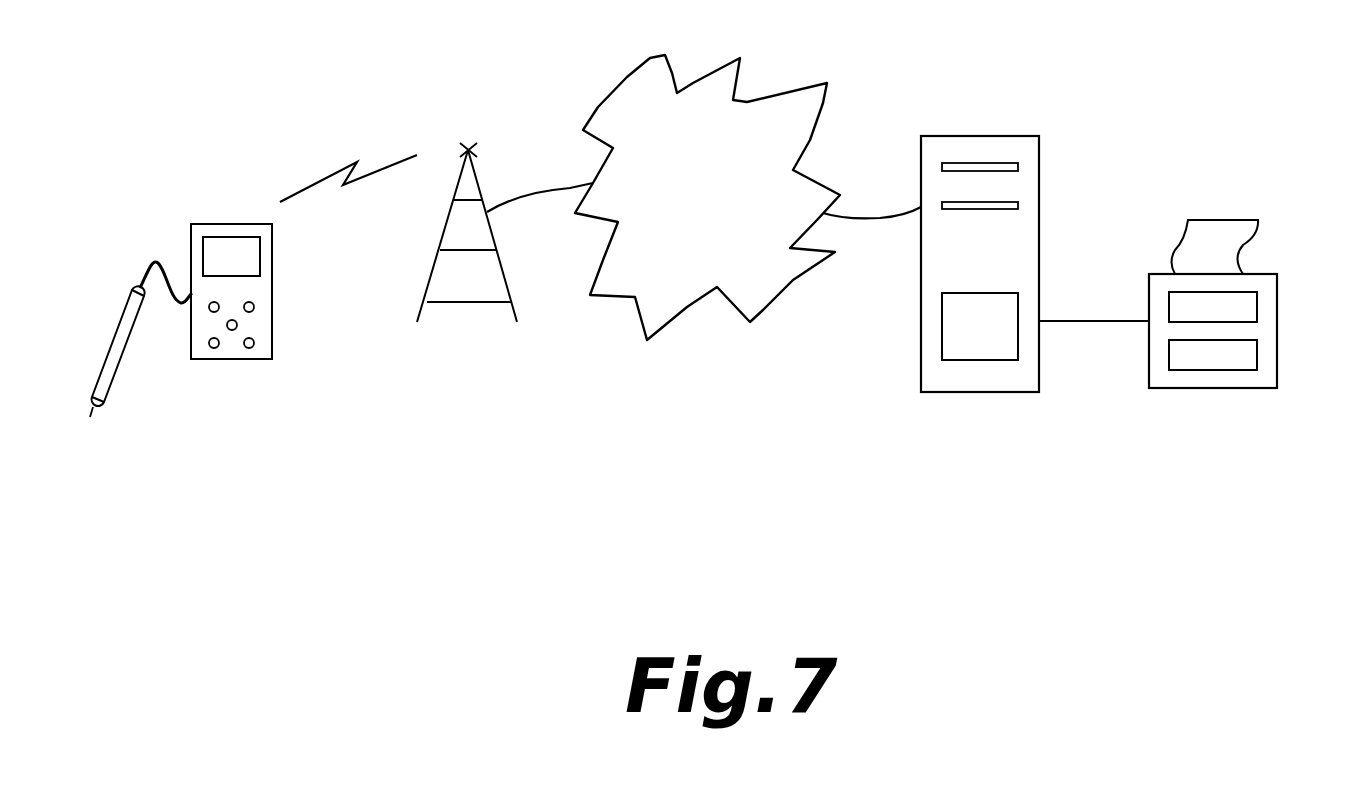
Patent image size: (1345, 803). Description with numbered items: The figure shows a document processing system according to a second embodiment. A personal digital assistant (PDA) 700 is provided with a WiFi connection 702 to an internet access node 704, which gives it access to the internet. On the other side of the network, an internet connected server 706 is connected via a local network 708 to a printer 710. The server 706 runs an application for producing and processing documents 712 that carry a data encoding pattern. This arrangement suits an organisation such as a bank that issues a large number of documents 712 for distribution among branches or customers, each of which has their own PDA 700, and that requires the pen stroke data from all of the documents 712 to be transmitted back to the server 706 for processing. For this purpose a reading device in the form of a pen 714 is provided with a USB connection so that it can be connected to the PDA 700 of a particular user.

The personal digital assistant 700 is at (273, 240).
The WiFi connection 702 is at (327, 175).
The internet access node 704 is at (515, 313).
The server 706 is at (921, 358).
The local network 708 is at (1112, 322).
The printer 710 is at (1260, 388).
The documents 712 is at (1250, 222).
The pen 714 is at (113, 387).